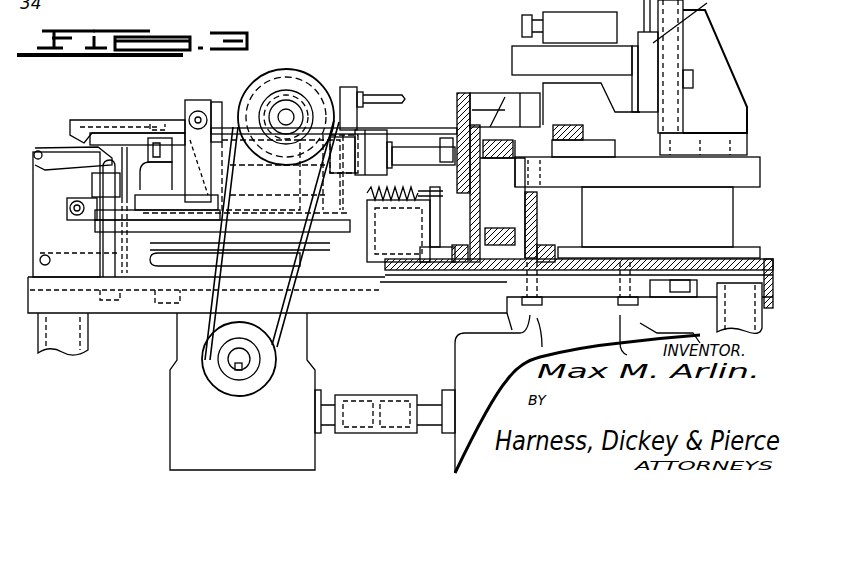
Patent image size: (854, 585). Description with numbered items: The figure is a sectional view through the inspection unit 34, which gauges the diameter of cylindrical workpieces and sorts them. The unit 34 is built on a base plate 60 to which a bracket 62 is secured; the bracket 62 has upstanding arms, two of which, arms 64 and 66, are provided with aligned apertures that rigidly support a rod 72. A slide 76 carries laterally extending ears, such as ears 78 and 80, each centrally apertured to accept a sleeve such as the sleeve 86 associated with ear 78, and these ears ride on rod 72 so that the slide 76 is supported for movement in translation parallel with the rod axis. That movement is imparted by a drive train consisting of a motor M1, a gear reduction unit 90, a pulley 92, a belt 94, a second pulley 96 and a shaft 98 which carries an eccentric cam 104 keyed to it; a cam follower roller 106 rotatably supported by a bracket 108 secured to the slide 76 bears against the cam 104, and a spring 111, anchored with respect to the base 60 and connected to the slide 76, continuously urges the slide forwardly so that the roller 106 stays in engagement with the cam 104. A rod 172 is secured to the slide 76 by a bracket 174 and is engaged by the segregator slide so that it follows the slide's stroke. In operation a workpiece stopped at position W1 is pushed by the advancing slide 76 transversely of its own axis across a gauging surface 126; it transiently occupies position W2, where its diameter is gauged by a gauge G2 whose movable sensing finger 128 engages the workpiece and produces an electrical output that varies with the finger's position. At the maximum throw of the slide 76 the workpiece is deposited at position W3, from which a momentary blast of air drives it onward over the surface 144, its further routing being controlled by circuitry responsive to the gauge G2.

The inspection unit 34 is at (735, 47).
The base plate 60 is at (53, 273).
The bracket 62 is at (178, 254).
The upstanding arm 64 is at (160, 184).
The upstanding arm 66 is at (335, 240).
The rod 72 is at (165, 157).
The slide 76 is at (138, 133).
The ear 78 is at (190, 150).
The ear 80 is at (375, 153).
The sleeve 86 is at (160, 183).
The gear reduction unit 90 is at (278, 432).
The pulley 92 is at (234, 387).
The belt 94 is at (280, 331).
The pulley 96 is at (338, 92).
The shaft 98 is at (287, 114).
The eccentric cam 104 is at (240, 78).
The cam follower roller 106 is at (222, 100).
The bracket 108 is at (187, 100).
The spring 111 is at (403, 195).
The gauging surface 126 is at (510, 160).
The sensing finger 128 is at (517, 100).
The surface 144 is at (556, 158).
The rod 172 is at (385, 90).
The bracket 174 is at (343, 113).
The gauge G2 is at (520, 53).
The motor M1 is at (465, 363).
The workpiece position W1 is at (495, 100).
The workpiece position W2 is at (540, 115).
The workpiece position W3 is at (557, 120).